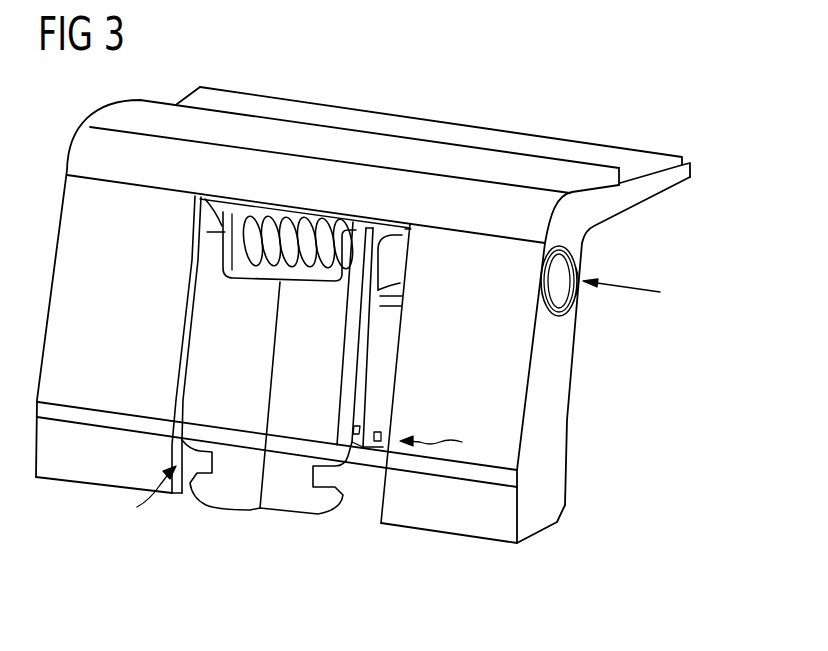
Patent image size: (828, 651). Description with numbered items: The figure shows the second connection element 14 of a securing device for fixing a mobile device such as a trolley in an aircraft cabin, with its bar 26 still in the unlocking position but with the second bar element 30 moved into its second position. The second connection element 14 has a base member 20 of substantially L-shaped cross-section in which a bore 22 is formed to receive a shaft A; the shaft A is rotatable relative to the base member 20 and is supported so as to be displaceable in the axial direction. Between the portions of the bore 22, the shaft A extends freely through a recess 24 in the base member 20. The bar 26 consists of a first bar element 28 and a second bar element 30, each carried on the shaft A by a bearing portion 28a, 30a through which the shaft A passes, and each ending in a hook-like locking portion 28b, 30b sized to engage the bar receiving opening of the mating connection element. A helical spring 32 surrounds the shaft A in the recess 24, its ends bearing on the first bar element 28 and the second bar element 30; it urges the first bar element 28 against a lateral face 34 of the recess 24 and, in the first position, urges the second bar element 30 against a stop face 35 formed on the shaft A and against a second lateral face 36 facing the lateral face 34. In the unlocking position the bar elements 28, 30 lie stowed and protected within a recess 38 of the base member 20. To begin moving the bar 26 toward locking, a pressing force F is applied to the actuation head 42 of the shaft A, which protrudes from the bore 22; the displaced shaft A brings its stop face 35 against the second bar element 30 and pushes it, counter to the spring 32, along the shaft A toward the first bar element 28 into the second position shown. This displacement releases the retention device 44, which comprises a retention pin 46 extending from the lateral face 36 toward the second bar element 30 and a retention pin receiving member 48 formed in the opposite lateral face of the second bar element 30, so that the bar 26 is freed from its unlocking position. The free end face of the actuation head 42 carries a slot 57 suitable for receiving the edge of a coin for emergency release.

The second connection element 14 is at (625, 120).
The base member 20 is at (458, 155).
The bore 22 is at (572, 260).
The recess 24 is at (280, 228).
The bar 26 is at (139, 495).
The first bar element 28 is at (200, 350).
The bearing portion 28a is at (221, 218).
The locking portion 28b is at (234, 515).
The second bar element 30 is at (383, 342).
The bearing portion 30a is at (371, 232).
The locking portion 30b is at (298, 520).
The spring 32 is at (300, 217).
The lateral face 34 is at (203, 257).
The stop face 35 is at (374, 263).
The second lateral face 36 is at (375, 373).
The recess 38 is at (383, 402).
The actuation head 42 is at (548, 279).
The retention device 44 is at (446, 441).
The retention pin 46 is at (377, 444).
The retention pin receiving member 48 is at (353, 423).
The slot 57 is at (582, 289).
The shaft A is at (409, 227).
The pressing force F is at (636, 283).